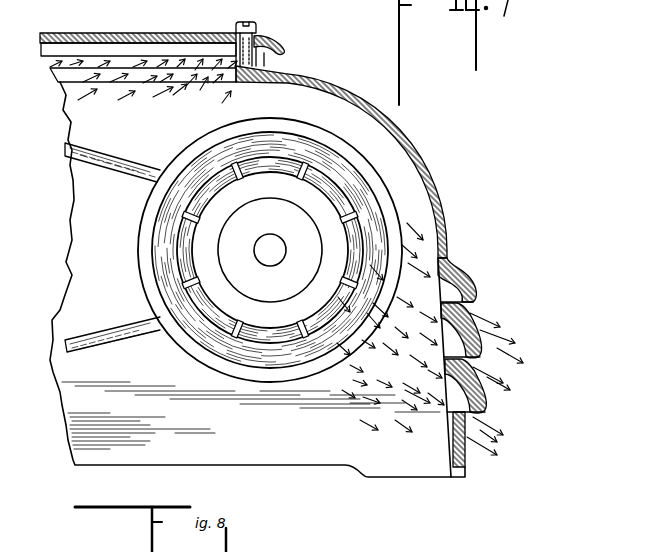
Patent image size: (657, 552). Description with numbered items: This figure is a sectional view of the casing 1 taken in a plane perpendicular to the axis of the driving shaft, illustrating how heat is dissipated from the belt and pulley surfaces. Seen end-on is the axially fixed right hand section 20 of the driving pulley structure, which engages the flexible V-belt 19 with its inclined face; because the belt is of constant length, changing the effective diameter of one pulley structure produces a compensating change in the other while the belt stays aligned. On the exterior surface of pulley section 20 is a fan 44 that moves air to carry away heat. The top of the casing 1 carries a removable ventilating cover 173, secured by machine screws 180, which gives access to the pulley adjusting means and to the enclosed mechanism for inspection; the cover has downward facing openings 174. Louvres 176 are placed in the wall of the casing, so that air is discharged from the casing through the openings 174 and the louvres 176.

The casing 1 is at (403, 128).
The V-belt 19 is at (97, 153).
The right hand section of pulley structure 20 is at (270, 117).
The fan 44 is at (282, 150).
The removable ventilating cover 173 is at (163, 35).
The downward facing openings 174 is at (265, 59).
The louvres 176 is at (470, 305).
The machine screws 180 is at (250, 24).